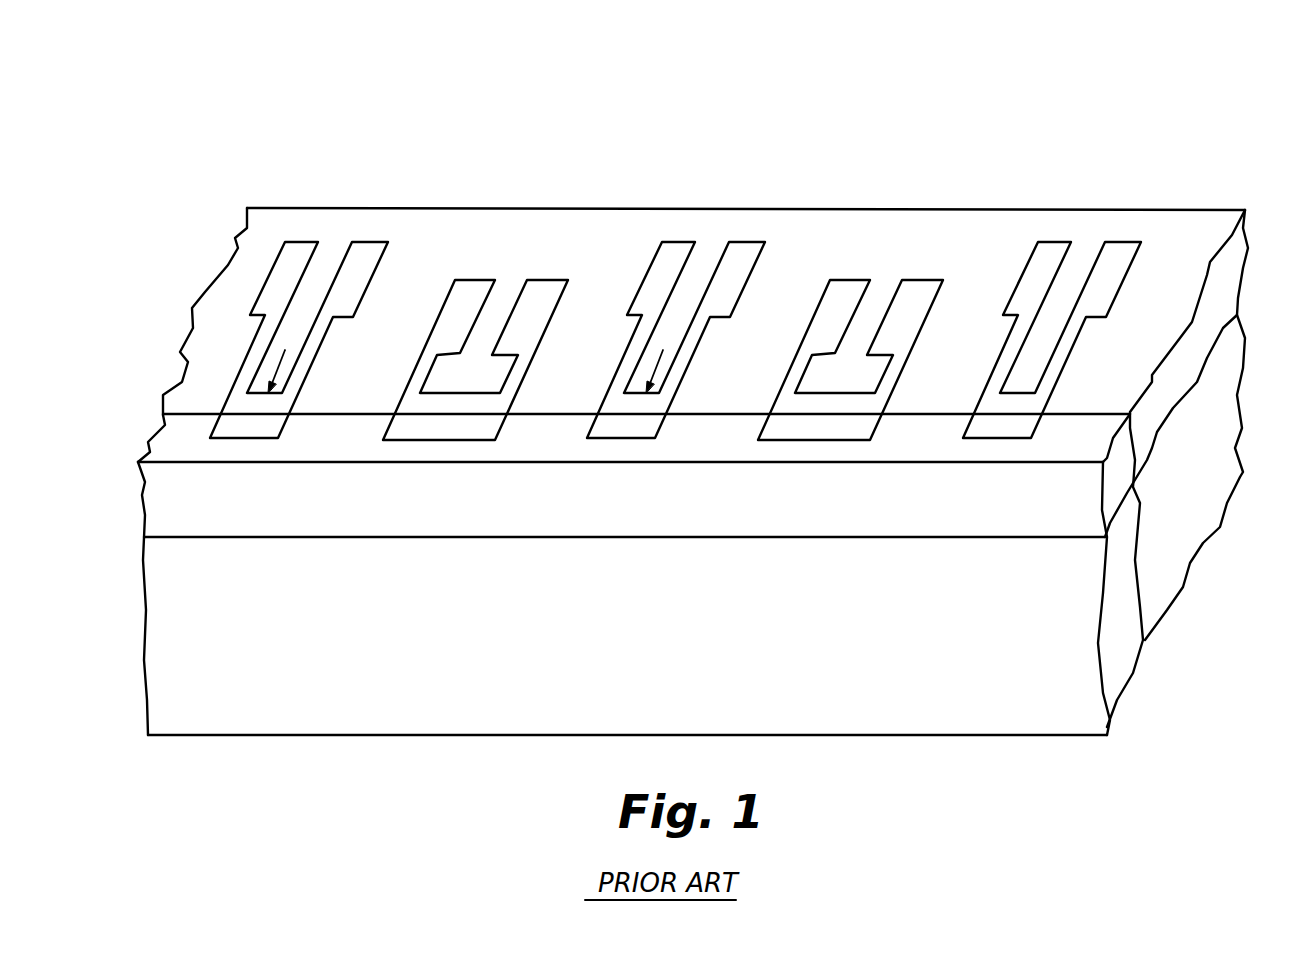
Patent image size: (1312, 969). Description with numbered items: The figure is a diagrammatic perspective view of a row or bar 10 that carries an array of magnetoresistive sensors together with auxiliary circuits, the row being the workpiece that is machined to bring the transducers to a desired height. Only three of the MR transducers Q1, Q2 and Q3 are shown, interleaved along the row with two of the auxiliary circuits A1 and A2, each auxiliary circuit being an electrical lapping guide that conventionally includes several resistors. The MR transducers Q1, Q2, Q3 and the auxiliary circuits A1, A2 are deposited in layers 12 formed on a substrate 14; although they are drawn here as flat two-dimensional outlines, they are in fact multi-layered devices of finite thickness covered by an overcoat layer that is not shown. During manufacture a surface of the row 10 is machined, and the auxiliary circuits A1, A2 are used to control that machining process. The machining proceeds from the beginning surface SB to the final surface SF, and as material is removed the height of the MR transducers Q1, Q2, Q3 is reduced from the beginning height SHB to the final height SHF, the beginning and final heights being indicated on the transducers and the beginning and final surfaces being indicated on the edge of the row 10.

The row or bar 10 is at (163, 131).
The layers 12 is at (1225, 273).
The substrate 14 is at (1207, 405).
The MR transducer Q1 is at (300, 240).
The auxiliary circuit A1 is at (472, 280).
The MR transducer Q2 is at (678, 242).
The auxiliary circuit A2 is at (850, 280).
The MR transducer Q3 is at (1063, 242).
The beginning surface SB is at (183, 462).
The final surface SF is at (1088, 414).
The beginning height SHB is at (242, 440).
The final height SHF is at (633, 417).